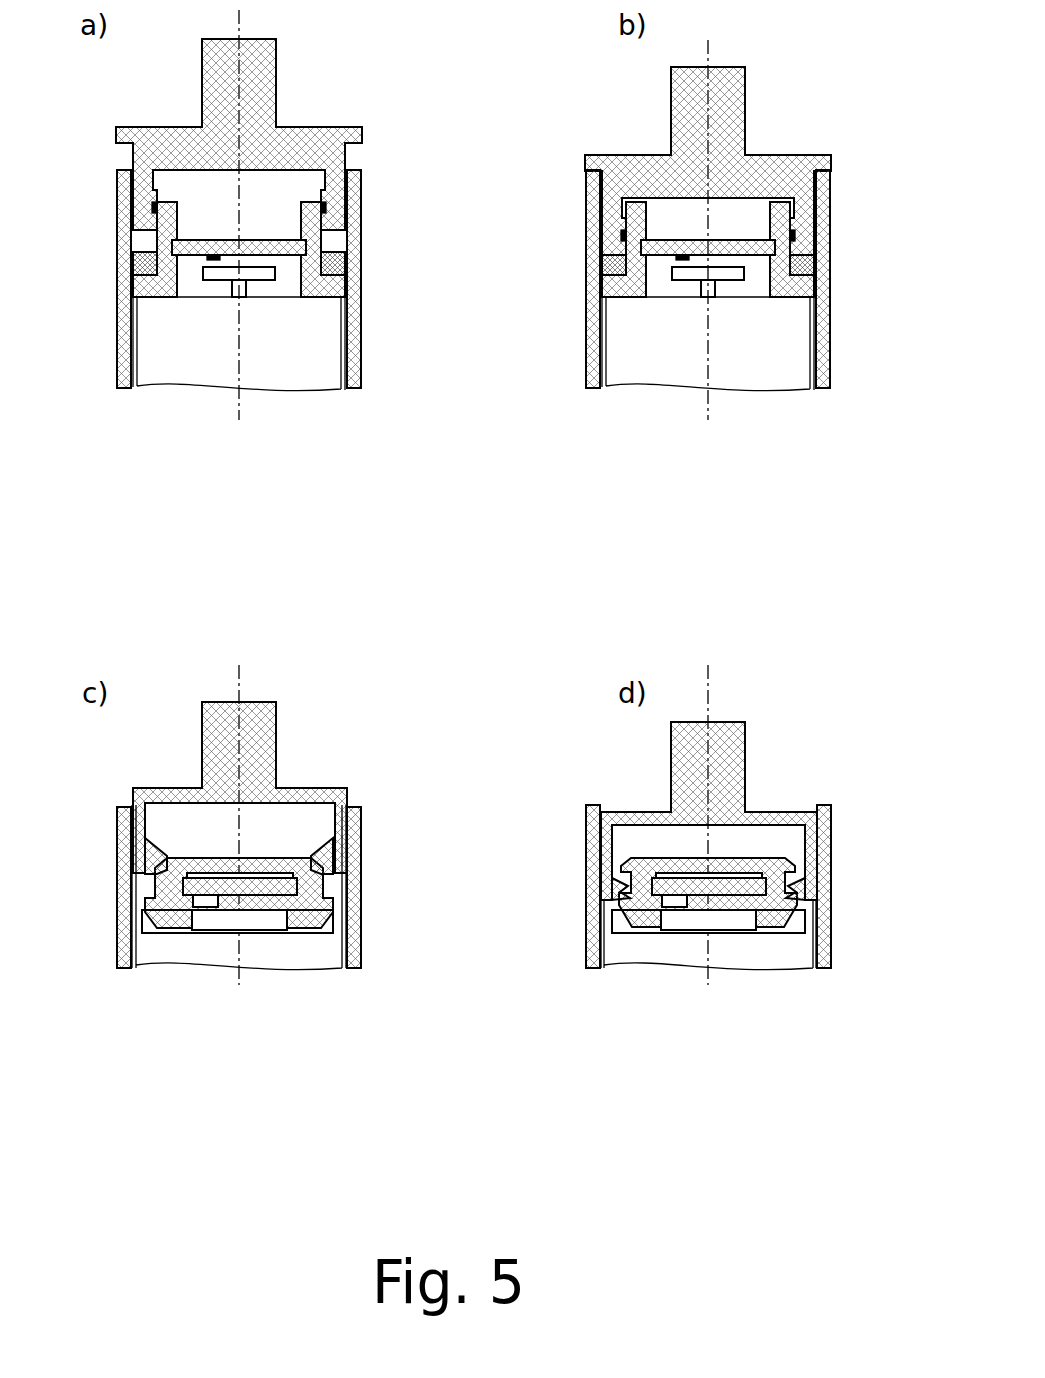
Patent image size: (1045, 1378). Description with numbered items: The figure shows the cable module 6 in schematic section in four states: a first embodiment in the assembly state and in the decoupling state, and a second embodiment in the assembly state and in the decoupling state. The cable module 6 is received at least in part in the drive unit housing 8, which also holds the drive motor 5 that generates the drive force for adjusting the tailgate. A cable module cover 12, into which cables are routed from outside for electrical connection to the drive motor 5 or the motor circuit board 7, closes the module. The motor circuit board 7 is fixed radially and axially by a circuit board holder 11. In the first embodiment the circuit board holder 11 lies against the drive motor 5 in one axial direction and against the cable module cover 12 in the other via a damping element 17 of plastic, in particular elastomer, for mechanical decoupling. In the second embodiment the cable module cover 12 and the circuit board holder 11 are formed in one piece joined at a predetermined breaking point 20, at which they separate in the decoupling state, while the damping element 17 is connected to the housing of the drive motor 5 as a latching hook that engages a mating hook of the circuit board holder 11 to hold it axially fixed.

The drive motor 5 is at (332, 350).
The cable module 6 is at (358, 100).
The motor circuit board 7 is at (277, 250).
The drive unit housing 8 is at (125, 319).
The circuit board holder 11 is at (312, 278).
The cable module cover 12 is at (167, 142).
The damping element 17 is at (338, 263).
The predetermined breaking point 20 is at (158, 864).